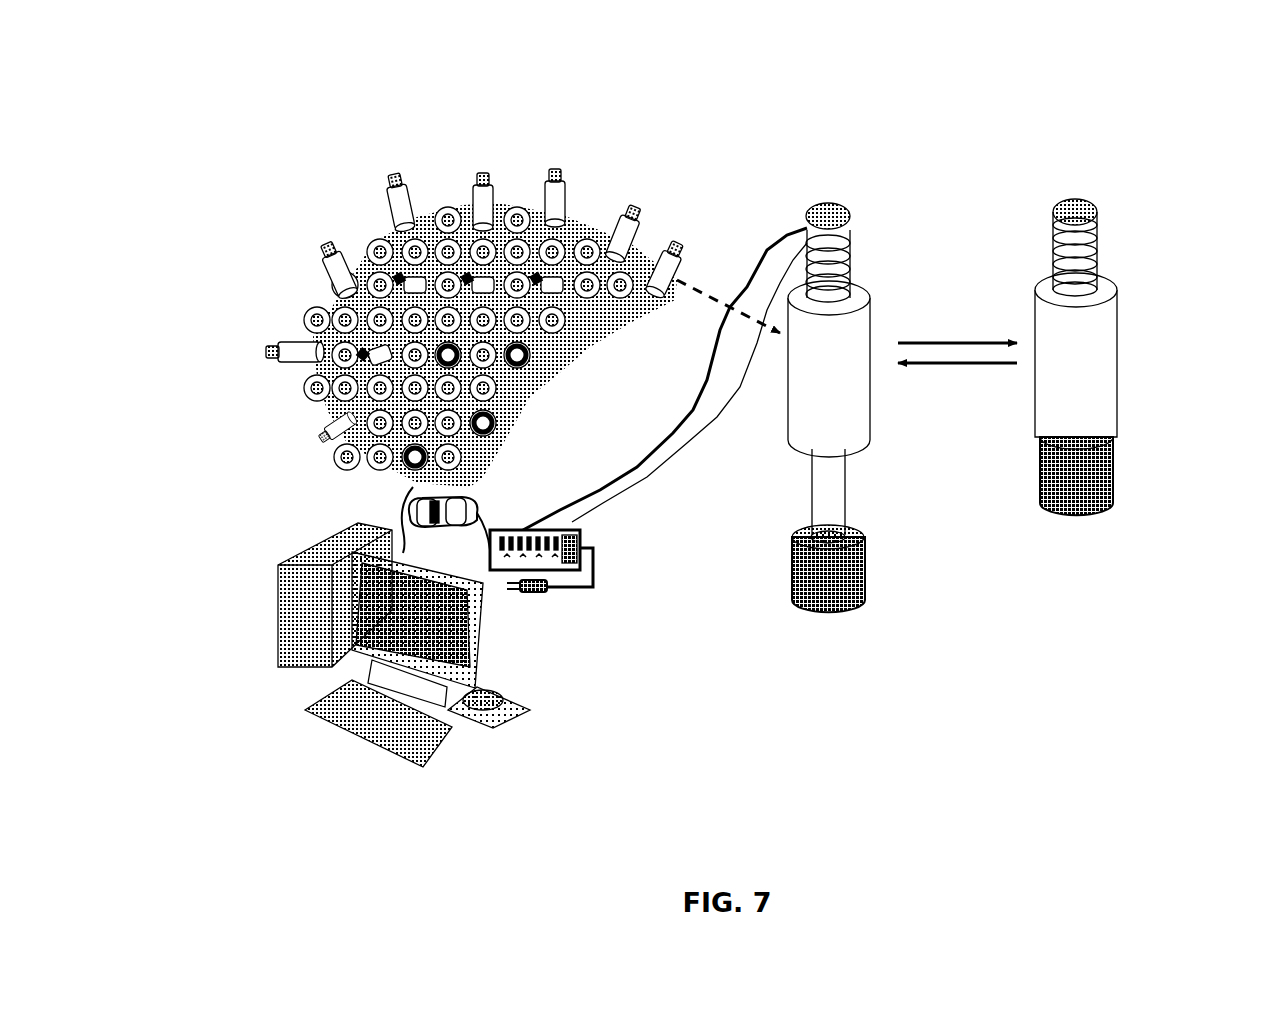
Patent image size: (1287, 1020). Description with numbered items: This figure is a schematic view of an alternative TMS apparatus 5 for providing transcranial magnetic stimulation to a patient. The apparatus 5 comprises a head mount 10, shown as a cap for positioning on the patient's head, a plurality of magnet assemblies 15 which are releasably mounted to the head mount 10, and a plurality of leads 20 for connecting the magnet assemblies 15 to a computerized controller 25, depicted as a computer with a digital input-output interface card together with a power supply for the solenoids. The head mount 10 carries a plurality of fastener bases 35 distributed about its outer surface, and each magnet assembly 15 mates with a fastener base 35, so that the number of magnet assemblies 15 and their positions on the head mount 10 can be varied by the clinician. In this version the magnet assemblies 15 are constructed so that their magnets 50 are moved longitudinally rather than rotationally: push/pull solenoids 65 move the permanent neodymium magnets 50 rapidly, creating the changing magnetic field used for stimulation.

The TMS apparatus 5 is at (986, 78).
The head mount 10 is at (528, 404).
The magnet assemblies 15 is at (323, 273).
The leads 20 is at (669, 433).
The computerized controller 25 is at (246, 546).
The fastener bases 35 is at (599, 307).
The magnets 50 is at (874, 562).
The solenoids 65 is at (878, 307).